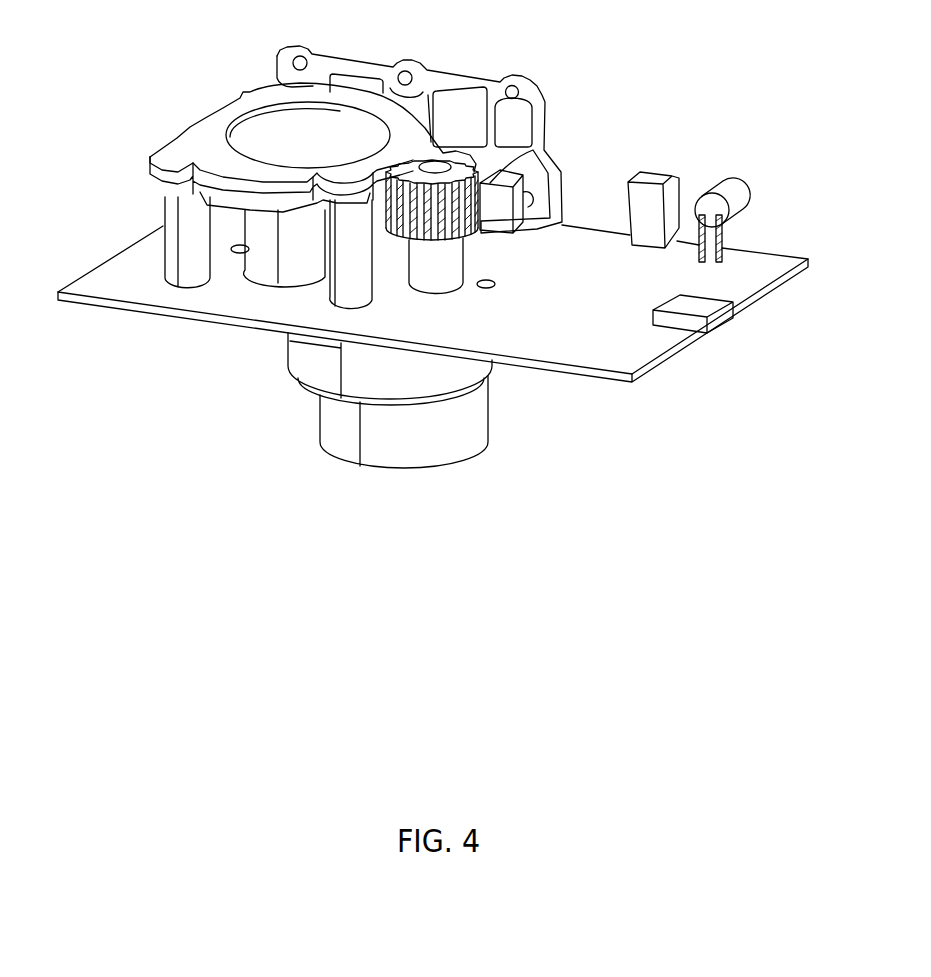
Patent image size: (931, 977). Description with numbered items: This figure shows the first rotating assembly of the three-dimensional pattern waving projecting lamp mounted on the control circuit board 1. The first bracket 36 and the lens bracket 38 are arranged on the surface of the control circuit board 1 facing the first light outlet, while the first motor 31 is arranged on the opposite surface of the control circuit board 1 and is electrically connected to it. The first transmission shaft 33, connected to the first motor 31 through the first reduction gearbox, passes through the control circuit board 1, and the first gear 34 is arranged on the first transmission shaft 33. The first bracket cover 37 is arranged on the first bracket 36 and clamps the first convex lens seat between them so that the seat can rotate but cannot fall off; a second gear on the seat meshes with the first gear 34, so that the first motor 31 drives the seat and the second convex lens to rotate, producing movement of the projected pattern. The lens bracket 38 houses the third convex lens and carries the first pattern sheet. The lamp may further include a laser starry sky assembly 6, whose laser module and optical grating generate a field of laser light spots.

The control circuit board 1 is at (743, 275).
The laser starry sky assembly 6 is at (268, 126).
The first motor 31 is at (405, 437).
The first transmission shaft 33 is at (440, 265).
The first gear 34 is at (483, 183).
The first bracket 36 is at (165, 203).
The first bracket cover 37 is at (205, 130).
The lens bracket 38 is at (263, 253).